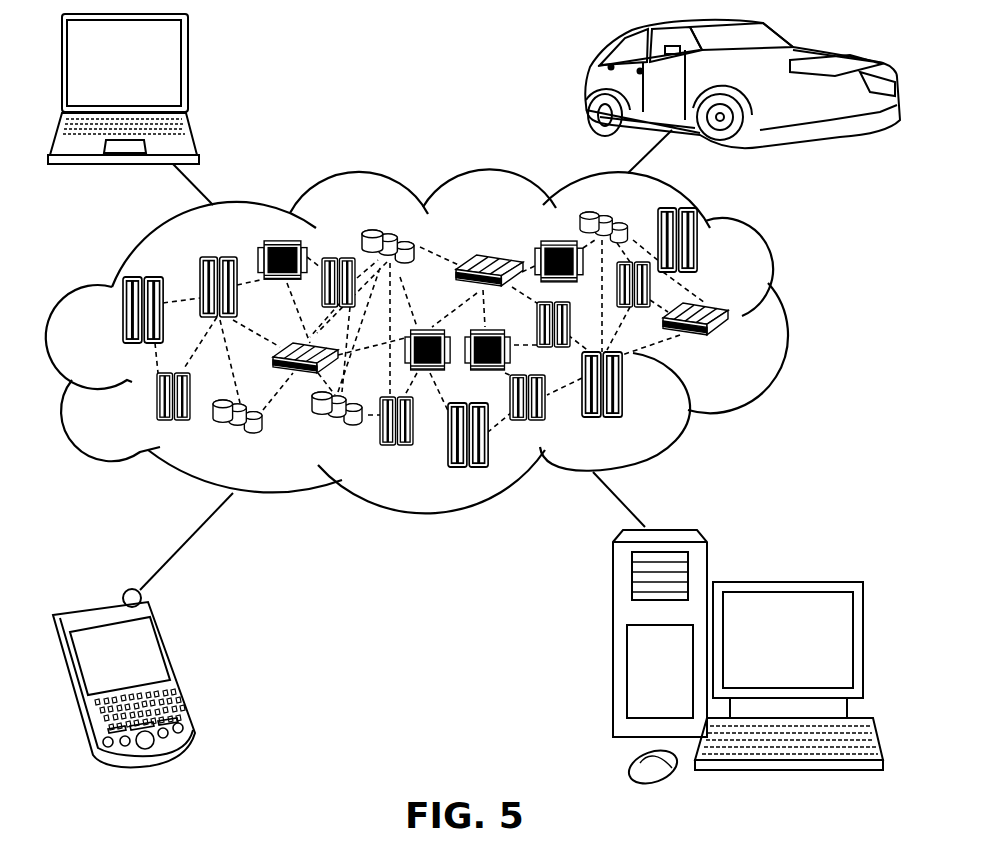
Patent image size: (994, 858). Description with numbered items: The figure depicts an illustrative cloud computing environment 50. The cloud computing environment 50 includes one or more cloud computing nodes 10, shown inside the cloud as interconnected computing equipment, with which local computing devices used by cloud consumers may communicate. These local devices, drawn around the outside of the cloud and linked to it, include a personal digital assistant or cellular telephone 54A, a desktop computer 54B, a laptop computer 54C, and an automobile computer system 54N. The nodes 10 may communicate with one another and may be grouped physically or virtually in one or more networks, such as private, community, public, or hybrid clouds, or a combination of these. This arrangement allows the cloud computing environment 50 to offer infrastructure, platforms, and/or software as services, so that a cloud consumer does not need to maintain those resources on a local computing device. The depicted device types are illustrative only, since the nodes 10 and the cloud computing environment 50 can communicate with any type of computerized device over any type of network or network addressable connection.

The cloud computing node 10 is at (738, 348).
The cloud computing environment 50 is at (788, 318).
The personal digital assistant (PDA) or cellular telephone 54A is at (178, 667).
The desktop computer 54B is at (786, 580).
The laptop computer 54C is at (188, 71).
The automobile computer system 54N is at (584, 83).